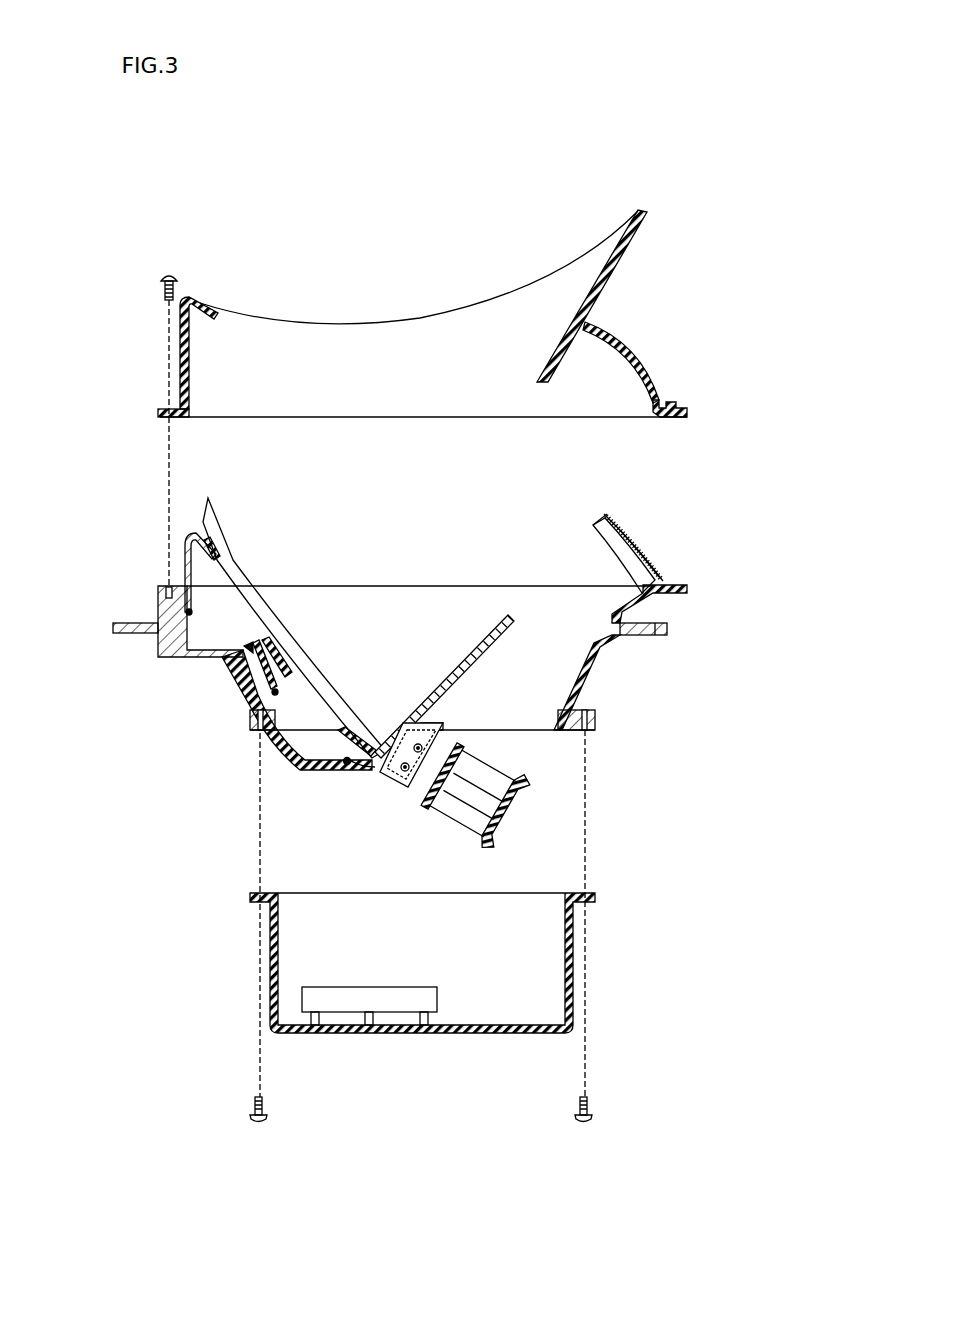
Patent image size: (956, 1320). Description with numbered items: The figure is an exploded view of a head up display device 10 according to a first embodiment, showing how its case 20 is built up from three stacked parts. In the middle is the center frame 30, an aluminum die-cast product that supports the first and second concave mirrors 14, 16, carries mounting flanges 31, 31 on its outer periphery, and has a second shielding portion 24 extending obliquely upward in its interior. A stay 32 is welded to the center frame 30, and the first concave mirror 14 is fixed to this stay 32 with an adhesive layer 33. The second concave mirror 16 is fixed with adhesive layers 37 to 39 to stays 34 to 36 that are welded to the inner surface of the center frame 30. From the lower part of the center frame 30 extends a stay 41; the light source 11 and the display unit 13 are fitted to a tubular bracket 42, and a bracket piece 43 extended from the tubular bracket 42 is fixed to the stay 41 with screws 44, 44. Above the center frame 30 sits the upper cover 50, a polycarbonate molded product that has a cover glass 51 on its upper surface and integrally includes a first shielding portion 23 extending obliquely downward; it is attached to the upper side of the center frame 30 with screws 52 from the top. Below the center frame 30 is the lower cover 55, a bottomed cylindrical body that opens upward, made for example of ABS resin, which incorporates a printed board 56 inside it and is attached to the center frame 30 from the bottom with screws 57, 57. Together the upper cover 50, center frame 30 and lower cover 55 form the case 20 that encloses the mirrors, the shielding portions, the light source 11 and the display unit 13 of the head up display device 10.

The head up display device 10 is at (106, 280).
The light source 11 is at (460, 813).
The display unit 13 is at (497, 775).
The first concave mirror 14 is at (602, 552).
The second concave mirror 16 is at (238, 572).
The case 20 is at (733, 985).
The first shielding portion 23 is at (553, 363).
The second shielding portion 24 is at (445, 680).
The center frame 30 is at (603, 671).
The mounting flanges 31 is at (128, 622).
The stay 32 is at (632, 540).
The adhesive layer 33 is at (594, 523).
The stay 34 is at (185, 558).
The stay 35 is at (255, 643).
The stay 36 is at (343, 768).
The adhesive layer 37 is at (212, 542).
The adhesive layer 38 is at (275, 652).
The adhesive layer 39 is at (360, 745).
The stay 41 is at (392, 780).
The tubular bracket 42 is at (512, 808).
The bracket piece 43 is at (425, 787).
The screws 44 is at (425, 747).
The upper cover 50 is at (656, 359).
The cover glass 51 is at (347, 320).
The screws 52 is at (168, 272).
The lower cover 55 is at (582, 954).
The printed board 56 is at (371, 998).
The screws 57 is at (258, 1125).